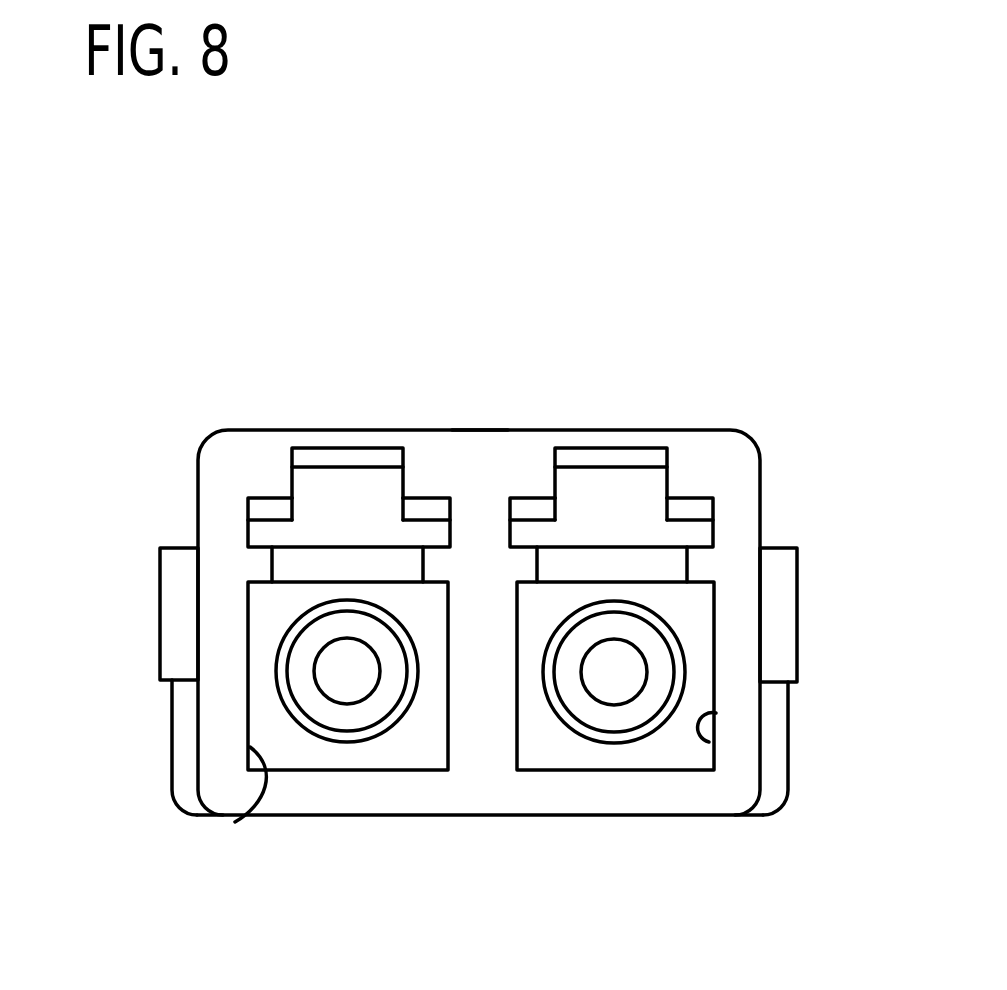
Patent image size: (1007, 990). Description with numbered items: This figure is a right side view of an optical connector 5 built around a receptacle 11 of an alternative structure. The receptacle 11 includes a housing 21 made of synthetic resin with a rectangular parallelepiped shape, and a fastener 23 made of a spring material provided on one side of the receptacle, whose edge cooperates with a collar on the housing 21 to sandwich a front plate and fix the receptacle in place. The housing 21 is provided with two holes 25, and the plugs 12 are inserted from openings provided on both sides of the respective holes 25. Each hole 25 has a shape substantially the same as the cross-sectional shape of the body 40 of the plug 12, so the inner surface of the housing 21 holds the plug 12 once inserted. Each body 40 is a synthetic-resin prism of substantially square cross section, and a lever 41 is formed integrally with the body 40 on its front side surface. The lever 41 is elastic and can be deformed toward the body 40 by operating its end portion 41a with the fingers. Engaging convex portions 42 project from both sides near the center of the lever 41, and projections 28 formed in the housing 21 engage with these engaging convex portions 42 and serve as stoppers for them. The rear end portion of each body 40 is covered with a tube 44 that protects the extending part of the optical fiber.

The optical connector 5 is at (488, 183).
The receptacle 11 is at (725, 430).
The plug 12 is at (453, 590).
The housing 21 is at (510, 457).
The fastener 23 is at (170, 670).
The hole 25 is at (235, 822).
The projection 28 is at (287, 497).
The body 40 is at (413, 755).
The lever 41 is at (320, 492).
The end portion 41a is at (357, 455).
The engaging convex portion 42 is at (260, 510).
The tube 44 is at (322, 712).